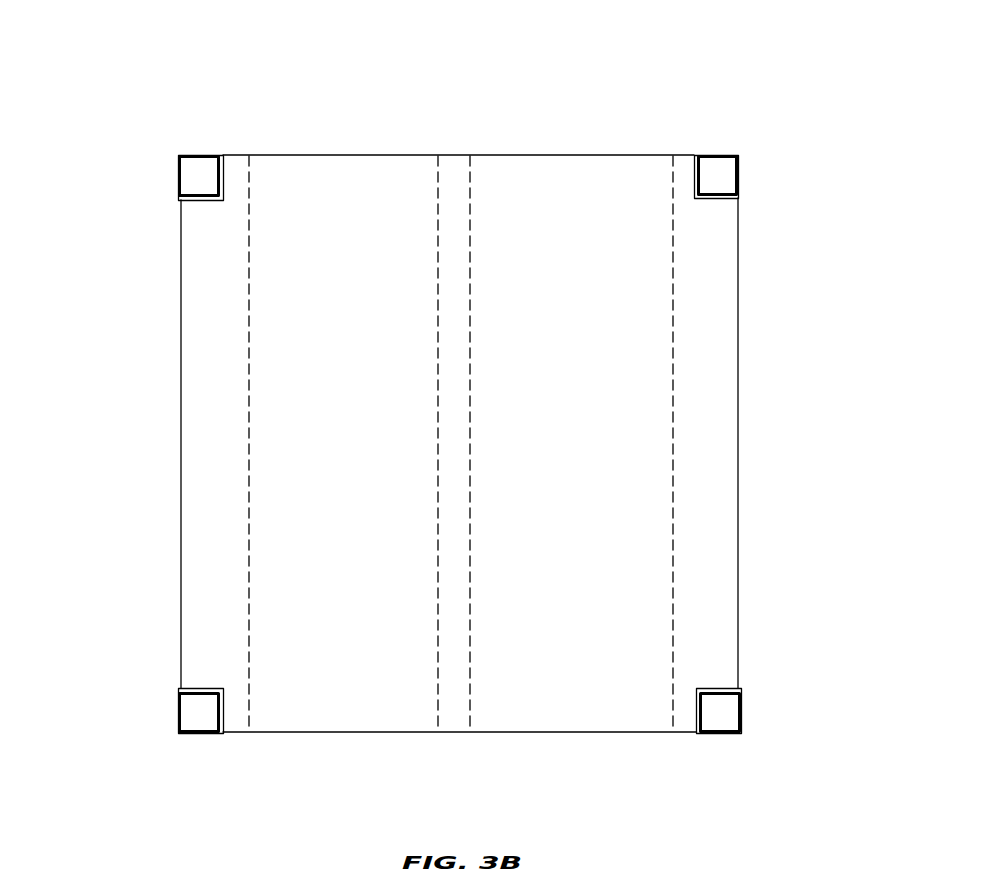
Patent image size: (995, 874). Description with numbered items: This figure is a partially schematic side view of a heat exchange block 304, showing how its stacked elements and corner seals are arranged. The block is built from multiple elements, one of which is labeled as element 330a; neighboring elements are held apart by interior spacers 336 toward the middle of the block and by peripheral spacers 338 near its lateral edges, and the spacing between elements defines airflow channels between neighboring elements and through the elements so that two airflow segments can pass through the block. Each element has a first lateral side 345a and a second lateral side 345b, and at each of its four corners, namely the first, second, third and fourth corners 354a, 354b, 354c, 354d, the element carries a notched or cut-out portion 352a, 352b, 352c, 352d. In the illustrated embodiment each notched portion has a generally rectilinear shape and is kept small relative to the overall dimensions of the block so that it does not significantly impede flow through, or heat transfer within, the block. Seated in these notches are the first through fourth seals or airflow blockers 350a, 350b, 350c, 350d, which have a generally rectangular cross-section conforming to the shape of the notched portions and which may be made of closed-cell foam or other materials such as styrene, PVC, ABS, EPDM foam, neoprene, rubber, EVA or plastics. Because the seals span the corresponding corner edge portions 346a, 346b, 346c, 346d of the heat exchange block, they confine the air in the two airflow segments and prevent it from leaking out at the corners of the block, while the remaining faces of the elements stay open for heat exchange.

The heat exchange block 304 is at (117, 75).
The element 330a is at (360, 168).
The interior spacer 336 is at (452, 200).
The peripheral spacer 338 is at (195, 352).
The first lateral side 345a is at (767, 450).
The second lateral side 345b is at (155, 452).
The corner edge portion 346a is at (772, 177).
The corner edge portion 346b is at (145, 178).
The corner edge portion 346c is at (145, 710).
The corner edge portion 346d is at (773, 708).
The first seal 350a is at (718, 155).
The second seal 350b is at (202, 155).
The third seal 350c is at (202, 735).
The fourth seal 350d is at (718, 735).
The notched portion 352a is at (728, 198).
The notched portion 352b is at (188, 202).
The notched portion 352c is at (188, 690).
The notched portion 352d is at (730, 688).
The first corner 354a is at (695, 132).
The second corner 354b is at (223, 135).
The third corner 354c is at (225, 755).
The fourth corner 354d is at (695, 755).